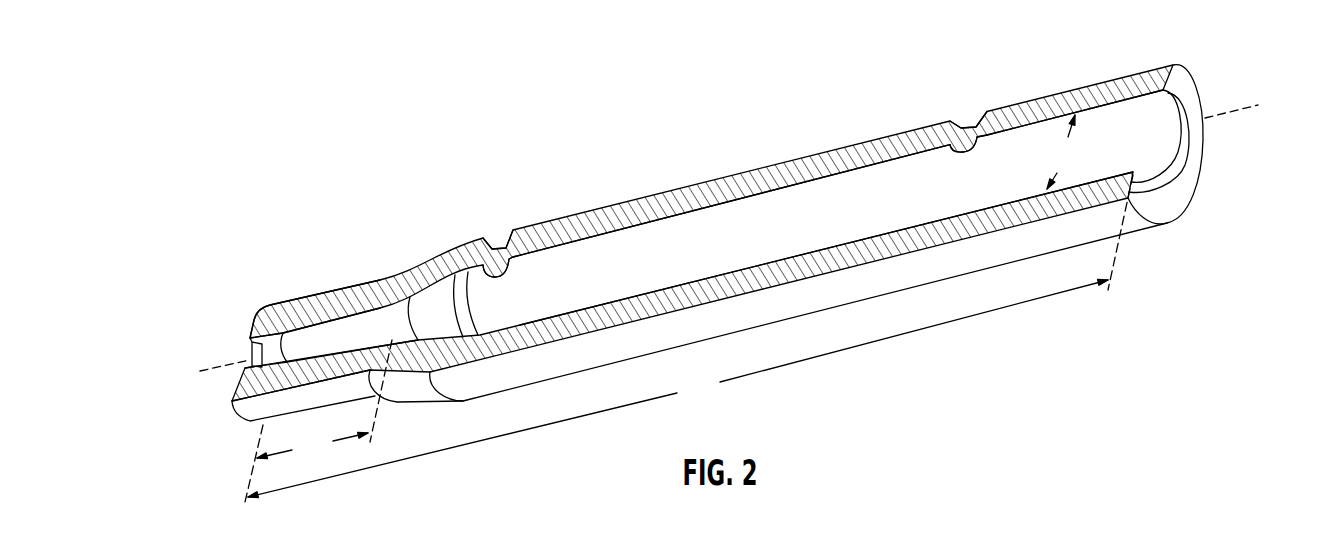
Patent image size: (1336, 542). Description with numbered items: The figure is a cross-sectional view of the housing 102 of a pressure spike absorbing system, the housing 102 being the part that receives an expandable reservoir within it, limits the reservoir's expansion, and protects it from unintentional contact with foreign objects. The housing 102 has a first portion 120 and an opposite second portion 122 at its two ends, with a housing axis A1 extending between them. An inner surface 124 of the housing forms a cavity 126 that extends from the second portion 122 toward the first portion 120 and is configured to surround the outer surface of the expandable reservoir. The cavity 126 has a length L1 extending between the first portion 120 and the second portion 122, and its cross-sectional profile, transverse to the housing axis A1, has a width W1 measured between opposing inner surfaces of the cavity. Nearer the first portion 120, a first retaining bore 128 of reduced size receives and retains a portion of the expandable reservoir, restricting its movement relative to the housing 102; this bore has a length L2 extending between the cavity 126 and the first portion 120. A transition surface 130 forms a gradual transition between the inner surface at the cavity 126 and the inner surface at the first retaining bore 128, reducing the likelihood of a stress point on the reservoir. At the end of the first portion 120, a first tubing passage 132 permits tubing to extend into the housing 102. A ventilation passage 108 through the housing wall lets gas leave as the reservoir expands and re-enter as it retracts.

The housing 102 is at (745, 148).
The ventilation passage 108 is at (497, 247).
The first portion 120 is at (240, 352).
The second portion 122 is at (1208, 97).
The inner surface 124 is at (665, 235).
The cavity 126 is at (873, 182).
The first retaining bore 128 is at (335, 330).
The transition surface 130 is at (435, 297).
The first tubing passage 132 is at (268, 348).
The width W1 is at (1066, 152).
The length L1 is at (689, 338).
The length L2 is at (324, 401).
The housing axis A1 is at (1238, 112).